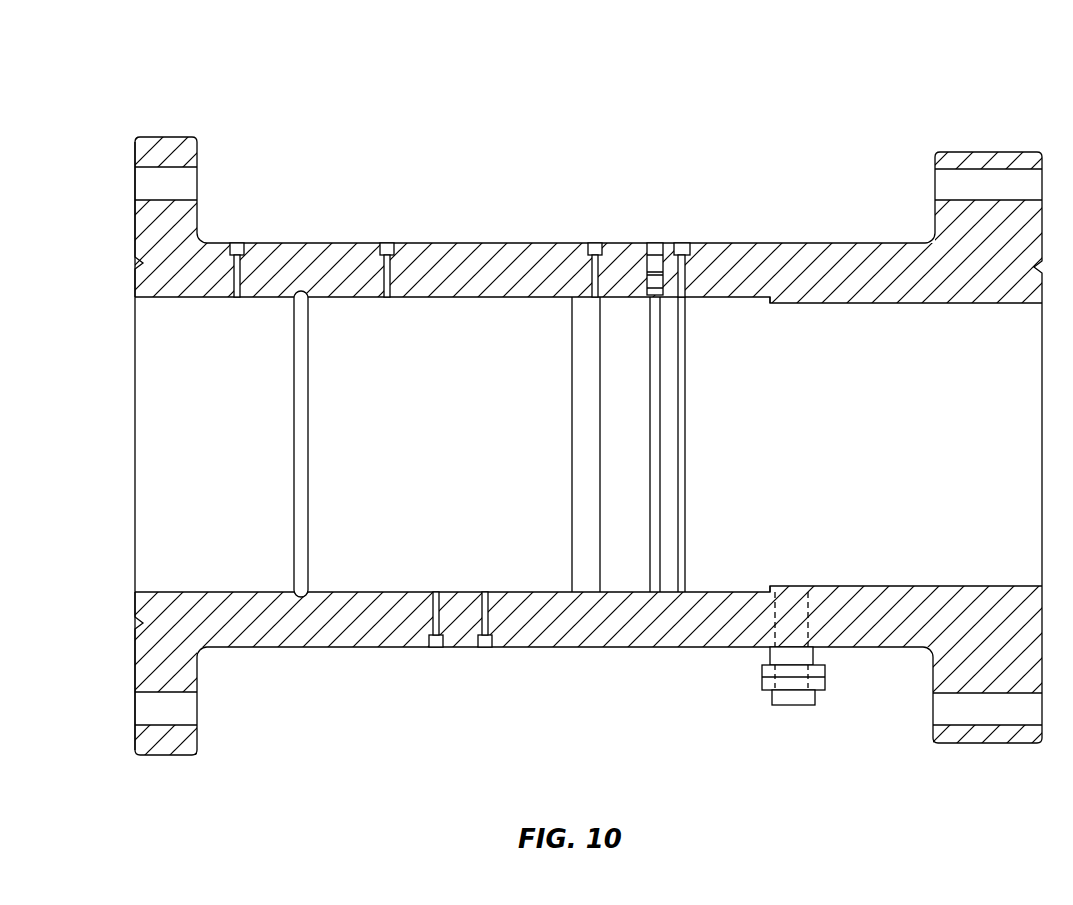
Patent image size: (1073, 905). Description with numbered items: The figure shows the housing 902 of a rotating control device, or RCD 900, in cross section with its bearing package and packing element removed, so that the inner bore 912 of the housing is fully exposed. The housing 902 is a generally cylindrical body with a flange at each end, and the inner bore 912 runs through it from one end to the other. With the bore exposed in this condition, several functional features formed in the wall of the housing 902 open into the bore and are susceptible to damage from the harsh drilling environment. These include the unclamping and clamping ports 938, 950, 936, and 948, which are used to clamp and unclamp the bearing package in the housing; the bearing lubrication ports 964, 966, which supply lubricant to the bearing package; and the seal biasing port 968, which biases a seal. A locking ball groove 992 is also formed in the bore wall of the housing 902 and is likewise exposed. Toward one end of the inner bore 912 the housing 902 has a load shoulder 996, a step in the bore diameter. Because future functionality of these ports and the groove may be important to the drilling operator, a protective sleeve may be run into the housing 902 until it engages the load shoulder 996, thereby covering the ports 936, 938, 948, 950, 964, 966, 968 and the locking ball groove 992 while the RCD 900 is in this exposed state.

The rotating control device 900 is at (558, 403).
The housing 902 is at (497, 258).
The inner bore 912 is at (155, 592).
The clamping port 936 is at (237, 243).
The unclamping port 938 is at (387, 243).
The clamping port 948 is at (436, 650).
The unclamping port 950 is at (485, 650).
The bearing lubrication port 964 is at (595, 243).
The bearing lubrication port 966 is at (655, 243).
The seal biasing port 968 is at (682, 243).
The locking ball groove 992 is at (300, 592).
The load shoulder 996 is at (780, 300).